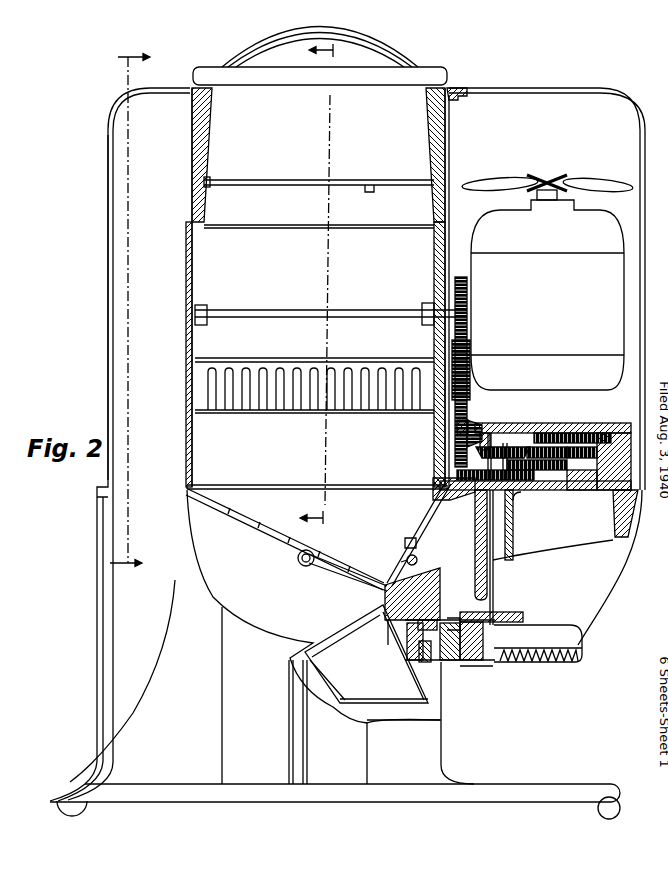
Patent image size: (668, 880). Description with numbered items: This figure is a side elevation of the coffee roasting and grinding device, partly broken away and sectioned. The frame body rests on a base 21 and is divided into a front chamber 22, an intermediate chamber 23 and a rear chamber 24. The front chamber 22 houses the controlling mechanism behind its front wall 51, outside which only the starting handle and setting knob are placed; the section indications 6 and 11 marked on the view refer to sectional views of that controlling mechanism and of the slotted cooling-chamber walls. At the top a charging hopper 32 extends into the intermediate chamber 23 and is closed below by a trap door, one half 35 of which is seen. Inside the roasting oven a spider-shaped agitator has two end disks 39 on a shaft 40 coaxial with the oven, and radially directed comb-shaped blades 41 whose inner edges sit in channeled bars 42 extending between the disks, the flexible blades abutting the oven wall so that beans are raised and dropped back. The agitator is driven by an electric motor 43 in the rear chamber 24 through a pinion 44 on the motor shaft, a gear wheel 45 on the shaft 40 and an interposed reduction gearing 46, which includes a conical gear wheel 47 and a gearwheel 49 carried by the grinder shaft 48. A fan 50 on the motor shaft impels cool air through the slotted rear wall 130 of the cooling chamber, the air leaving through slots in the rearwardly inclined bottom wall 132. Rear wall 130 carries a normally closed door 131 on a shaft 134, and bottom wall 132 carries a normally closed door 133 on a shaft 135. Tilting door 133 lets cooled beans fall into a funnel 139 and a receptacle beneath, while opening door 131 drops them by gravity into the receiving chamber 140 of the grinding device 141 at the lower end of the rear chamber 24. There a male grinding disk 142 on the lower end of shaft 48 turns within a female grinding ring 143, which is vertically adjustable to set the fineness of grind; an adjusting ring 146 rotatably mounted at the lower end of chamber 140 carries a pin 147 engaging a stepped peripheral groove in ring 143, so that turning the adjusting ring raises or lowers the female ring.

The section line 6- 6 is at (139, 313).
The section line 11- 11 is at (305, 285).
The base 21 is at (562, 801).
The front chamber 22 is at (135, 212).
The intermediate chamber 23 is at (253, 202).
The rear chamber 24 is at (534, 122).
The charging hopper 32 is at (446, 88).
The trap door half 35 is at (368, 191).
The end disk 39 is at (200, 273).
The shaft 40 is at (368, 310).
The comb shaped blade 41 is at (322, 380).
The channeled bar 42 is at (232, 360).
The electric motor 43 is at (490, 228).
The pinion 44 is at (525, 438).
The gear wheel 45 is at (468, 294).
The reduction gearing 46 is at (575, 433).
The conical gear wheel 47 is at (487, 456).
The grinder shaft 48 is at (494, 528).
The gearwheel 49 is at (470, 493).
The fan 50 is at (592, 183).
The front wall 51 is at (108, 252).
The rear wall 130 is at (430, 505).
The door 131 is at (410, 542).
The bottom wall 132 is at (240, 505).
The door 133 is at (328, 558).
The shaft 134 is at (411, 565).
The shaft 135 is at (298, 562).
The funnel 139 is at (318, 642).
The receiving chamber 140 is at (477, 665).
The grinding device 141 is at (553, 595).
The male grinding disk 142 is at (471, 663).
The female grinding ring 143 is at (440, 620).
The adjusting ring 146 is at (554, 667).
The pin 147 is at (434, 637).